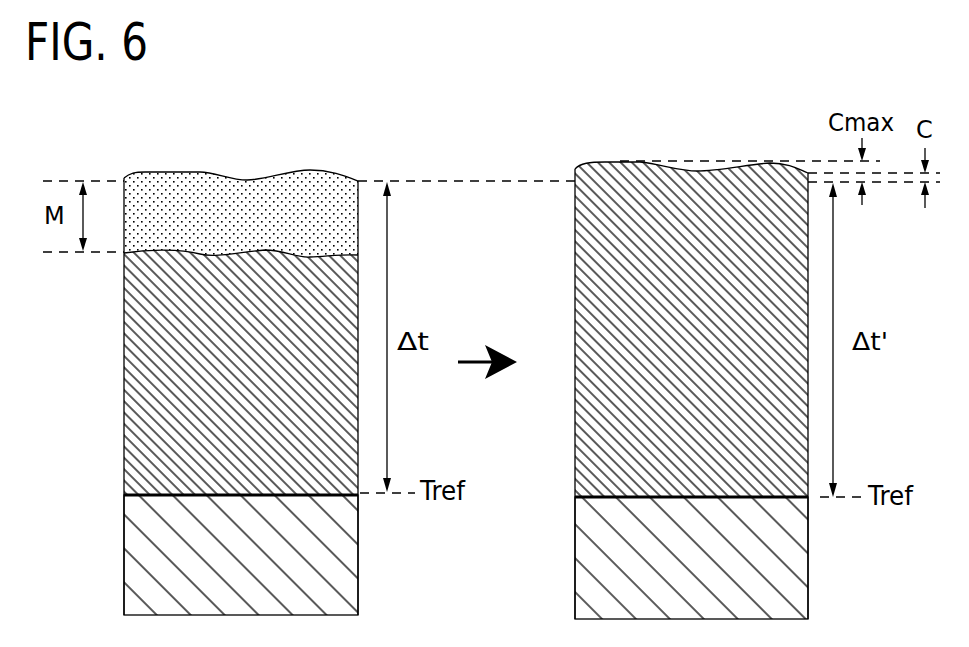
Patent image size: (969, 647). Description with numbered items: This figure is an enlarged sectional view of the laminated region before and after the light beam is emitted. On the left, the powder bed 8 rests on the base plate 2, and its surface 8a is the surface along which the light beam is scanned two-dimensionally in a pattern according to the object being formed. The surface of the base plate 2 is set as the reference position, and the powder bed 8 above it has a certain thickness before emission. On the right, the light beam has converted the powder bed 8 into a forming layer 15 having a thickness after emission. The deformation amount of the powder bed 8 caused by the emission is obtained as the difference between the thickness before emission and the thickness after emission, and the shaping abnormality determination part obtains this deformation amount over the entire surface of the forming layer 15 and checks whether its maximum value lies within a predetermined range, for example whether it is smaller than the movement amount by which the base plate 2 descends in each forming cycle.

The base plate 2 is at (124, 565).
The powder bed 8 is at (247, 178).
The surface of the powder bed 8a is at (304, 171).
The forming layer 15 is at (698, 170).